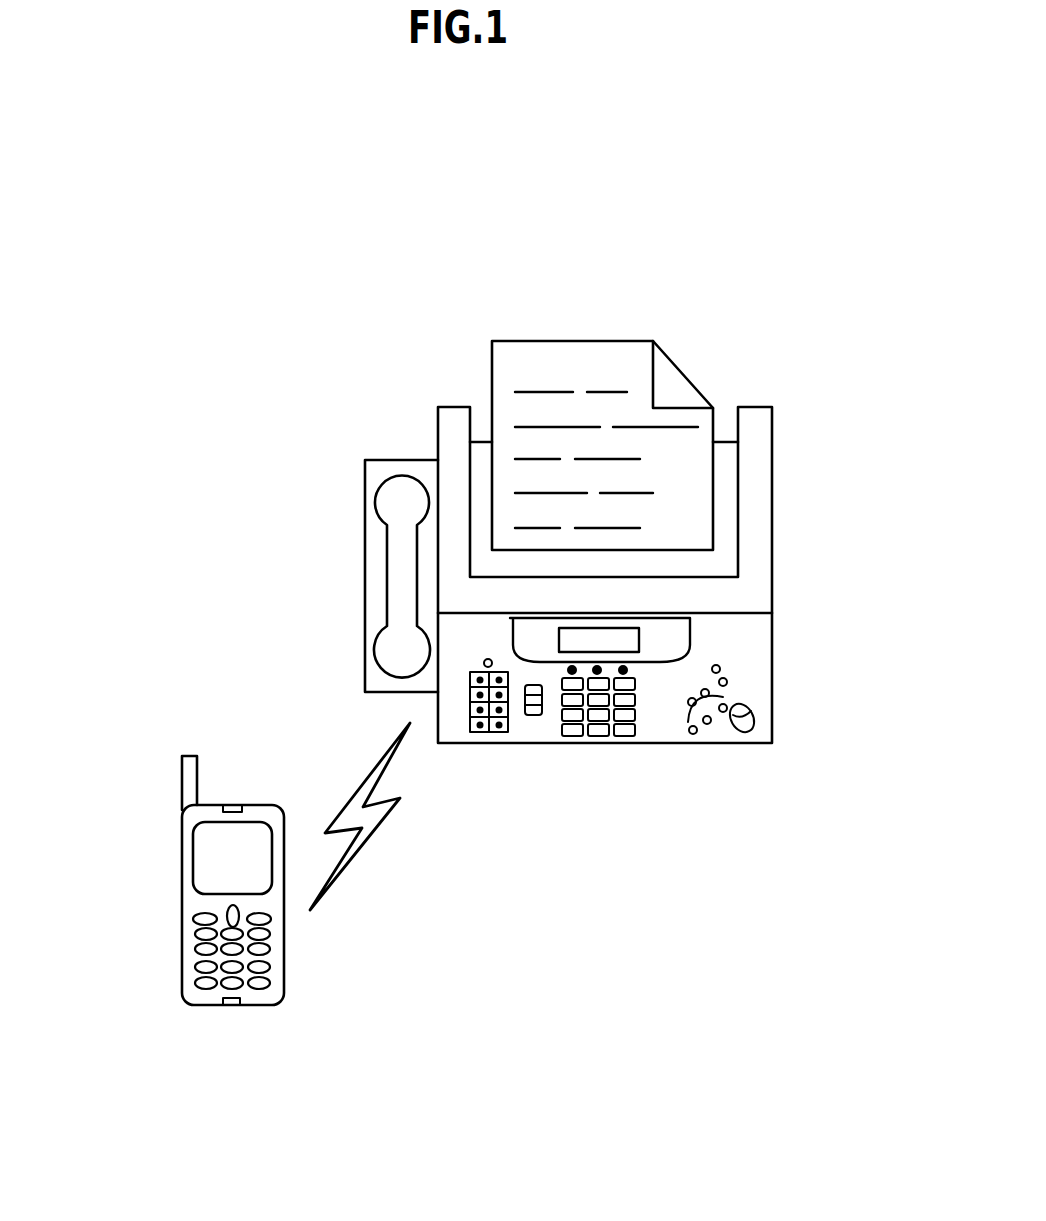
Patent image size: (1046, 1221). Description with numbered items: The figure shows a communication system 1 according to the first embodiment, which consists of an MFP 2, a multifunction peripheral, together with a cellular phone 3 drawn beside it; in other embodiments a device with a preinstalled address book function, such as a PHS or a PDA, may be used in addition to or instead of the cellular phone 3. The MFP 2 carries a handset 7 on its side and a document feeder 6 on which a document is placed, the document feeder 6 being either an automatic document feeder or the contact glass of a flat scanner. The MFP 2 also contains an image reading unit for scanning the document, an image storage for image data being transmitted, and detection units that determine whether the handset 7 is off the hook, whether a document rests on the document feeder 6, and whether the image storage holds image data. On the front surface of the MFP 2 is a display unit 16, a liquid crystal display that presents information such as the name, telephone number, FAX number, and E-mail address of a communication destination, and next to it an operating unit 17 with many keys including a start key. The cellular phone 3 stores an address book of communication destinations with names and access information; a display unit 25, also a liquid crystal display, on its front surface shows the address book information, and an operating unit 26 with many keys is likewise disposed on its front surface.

The communication system 1 is at (627, 122).
The MFP (multifunction peripheral) 2 is at (603, 307).
The cellular phone 3 is at (152, 841).
The document feeder 6 is at (708, 550).
The handset 7 is at (390, 652).
The display unit 16 is at (639, 633).
The operating unit 17 is at (603, 758).
The display unit 25 is at (207, 868).
The operating unit 26 is at (210, 1009).